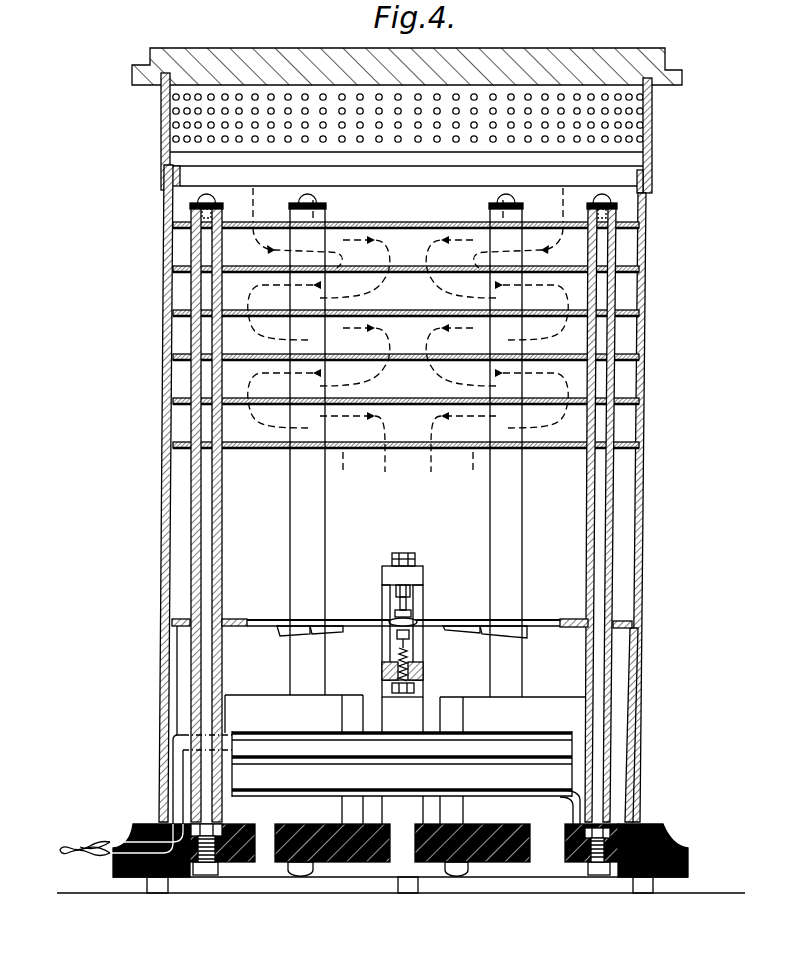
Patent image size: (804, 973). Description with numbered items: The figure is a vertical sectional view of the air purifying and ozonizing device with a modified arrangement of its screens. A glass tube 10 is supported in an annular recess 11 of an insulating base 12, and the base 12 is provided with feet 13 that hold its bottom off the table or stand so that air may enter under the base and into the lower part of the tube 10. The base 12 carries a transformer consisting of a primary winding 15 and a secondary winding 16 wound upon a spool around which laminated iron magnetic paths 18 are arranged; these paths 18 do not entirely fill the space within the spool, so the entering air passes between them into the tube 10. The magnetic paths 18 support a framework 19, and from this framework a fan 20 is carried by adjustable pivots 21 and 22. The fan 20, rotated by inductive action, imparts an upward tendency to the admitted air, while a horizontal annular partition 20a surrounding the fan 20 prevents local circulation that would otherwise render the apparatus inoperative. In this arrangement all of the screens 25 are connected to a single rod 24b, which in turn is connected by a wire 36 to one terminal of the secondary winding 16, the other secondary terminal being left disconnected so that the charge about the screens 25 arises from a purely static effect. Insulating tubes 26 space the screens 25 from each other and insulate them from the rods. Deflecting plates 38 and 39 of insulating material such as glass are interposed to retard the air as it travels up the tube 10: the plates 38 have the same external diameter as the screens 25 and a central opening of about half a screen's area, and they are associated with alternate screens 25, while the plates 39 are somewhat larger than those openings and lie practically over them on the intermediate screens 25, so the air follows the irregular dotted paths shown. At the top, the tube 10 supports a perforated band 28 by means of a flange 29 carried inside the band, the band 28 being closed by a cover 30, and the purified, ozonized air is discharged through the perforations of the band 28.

The glass tube 10 is at (644, 392).
The annular recess 11 is at (645, 824).
The insulating base 12 is at (690, 856).
The feet 13 is at (158, 888).
The primary winding 15 is at (250, 745).
The secondary winding 16 is at (560, 772).
The magnetic paths 18 is at (238, 701).
The framework 19 is at (383, 578).
The fan 20 is at (438, 619).
The horizontal annular partition 20a is at (567, 618).
The adjustable pivot 21 is at (413, 553).
The adjustable pivot 22 is at (408, 659).
The rod 24b is at (600, 494).
The screens 25 is at (562, 223).
The insulating tubes 26 is at (325, 520).
The perforated band 28 is at (653, 162).
The flange 29 is at (188, 172).
The cover 30 is at (666, 60).
The wire 36 is at (570, 805).
The deflecting plates 38 is at (561, 268).
The deflecting plates 39 is at (418, 218).